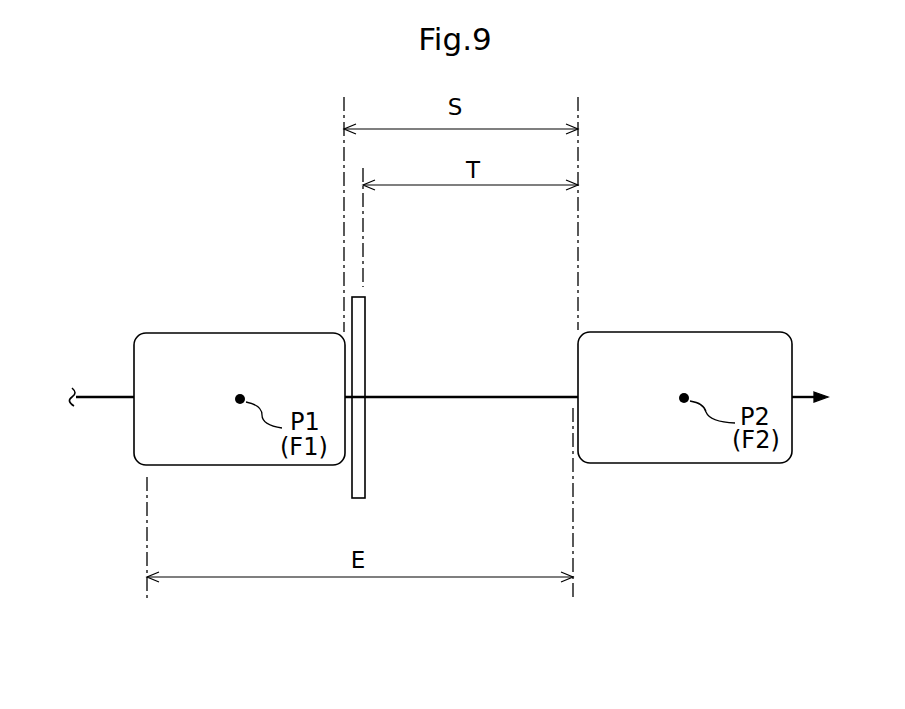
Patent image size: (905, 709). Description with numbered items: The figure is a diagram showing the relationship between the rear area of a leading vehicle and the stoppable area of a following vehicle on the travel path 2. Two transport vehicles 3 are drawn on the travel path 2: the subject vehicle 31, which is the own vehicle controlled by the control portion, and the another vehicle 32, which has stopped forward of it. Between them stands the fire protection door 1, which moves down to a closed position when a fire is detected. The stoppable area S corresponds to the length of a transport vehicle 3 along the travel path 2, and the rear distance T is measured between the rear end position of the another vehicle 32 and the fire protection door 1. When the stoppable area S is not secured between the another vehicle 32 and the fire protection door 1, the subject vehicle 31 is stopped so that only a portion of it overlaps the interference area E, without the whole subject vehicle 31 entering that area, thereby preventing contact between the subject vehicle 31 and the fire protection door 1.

The fire protection door 1 is at (352, 477).
The travel path 2 is at (453, 399).
The transport vehicle 3 is at (463, 340).
The subject vehicle 31 is at (231, 333).
The another vehicle 32 is at (737, 332).